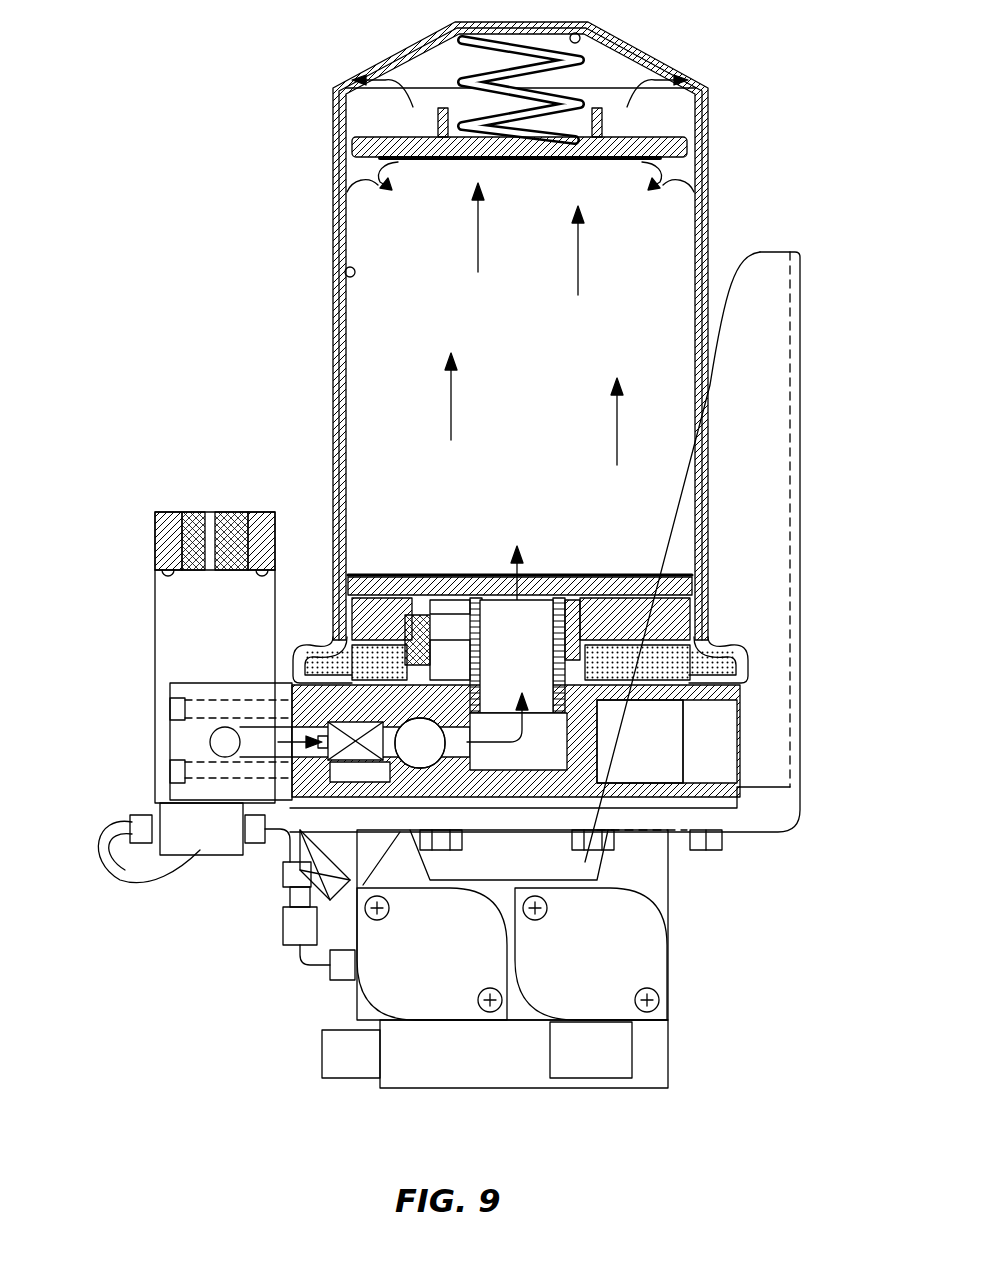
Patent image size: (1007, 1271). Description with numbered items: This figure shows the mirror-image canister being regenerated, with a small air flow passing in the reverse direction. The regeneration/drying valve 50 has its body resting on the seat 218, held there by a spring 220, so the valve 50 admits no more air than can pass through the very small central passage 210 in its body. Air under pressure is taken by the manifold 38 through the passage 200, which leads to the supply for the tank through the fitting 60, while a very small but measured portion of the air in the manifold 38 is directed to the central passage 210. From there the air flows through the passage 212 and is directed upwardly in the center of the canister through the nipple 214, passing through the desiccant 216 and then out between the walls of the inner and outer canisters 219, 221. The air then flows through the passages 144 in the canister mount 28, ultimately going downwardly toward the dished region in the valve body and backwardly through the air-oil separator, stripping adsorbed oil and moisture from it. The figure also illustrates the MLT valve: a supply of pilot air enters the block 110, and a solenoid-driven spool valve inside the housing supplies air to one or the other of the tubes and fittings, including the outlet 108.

The canister mount 28 is at (736, 158).
The inner canister 219 is at (345, 272).
The outer canister 221 is at (335, 355).
The desiccant 216 is at (548, 490).
The nipple 214 is at (553, 605).
The passage 212 is at (568, 769).
The passages 144 is at (603, 655).
The seat 218 is at (443, 760).
The fitting 60 is at (287, 518).
The manifold 38 is at (140, 670).
The passage 200 is at (210, 743).
The block 110 is at (190, 840).
The spring 220 is at (270, 848).
The regeneration/drying valve 50 is at (420, 748).
The central passage 210 is at (303, 958).
The outlet 108 is at (307, 965).